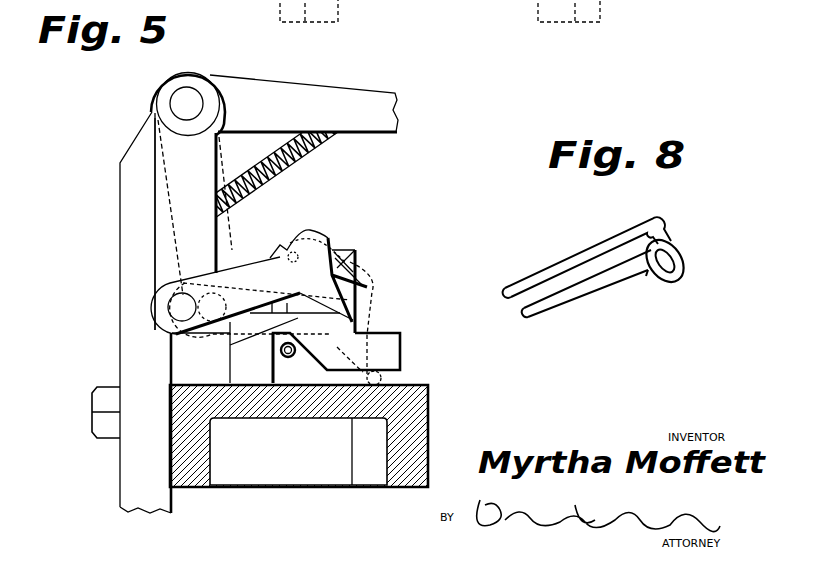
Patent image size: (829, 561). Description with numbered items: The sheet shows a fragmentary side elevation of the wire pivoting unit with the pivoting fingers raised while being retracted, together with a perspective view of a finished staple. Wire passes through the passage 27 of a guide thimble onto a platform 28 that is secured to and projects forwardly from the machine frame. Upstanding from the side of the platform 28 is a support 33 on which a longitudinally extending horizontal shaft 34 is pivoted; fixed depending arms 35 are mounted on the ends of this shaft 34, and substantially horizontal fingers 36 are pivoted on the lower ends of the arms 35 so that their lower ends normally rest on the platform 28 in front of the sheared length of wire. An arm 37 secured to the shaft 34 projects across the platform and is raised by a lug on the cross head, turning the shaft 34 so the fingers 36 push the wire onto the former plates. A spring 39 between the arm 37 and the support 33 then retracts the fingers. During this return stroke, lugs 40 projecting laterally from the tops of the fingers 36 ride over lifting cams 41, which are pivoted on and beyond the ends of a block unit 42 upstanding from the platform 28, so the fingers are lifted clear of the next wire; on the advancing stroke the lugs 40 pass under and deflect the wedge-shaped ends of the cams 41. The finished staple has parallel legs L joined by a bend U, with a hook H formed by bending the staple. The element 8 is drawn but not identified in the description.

In FIG. 5, the support 33 is at (138, 224).
In FIG. 5, the horizontal shaft 34 is at (190, 102).
In FIG. 5, the depending arms 35 is at (178, 172).
In FIG. 5, the fingers 36 is at (247, 275).
In FIG. 5, the arm 37 is at (302, 100).
In FIG. 5, the spring 39 is at (300, 160).
In FIG. 5, the lugs 40 is at (313, 233).
In FIG. 5, the lifting cams 41 is at (340, 268).
In FIG. 5, the block unit 42 is at (327, 325).
In FIG. 5, the support wall 8 is at (283, 352).
In FIG. 5, the passage 27 is at (295, 352).
In FIG. 5, the platform 28 is at (410, 415).
In FIG. 8, the legs L is at (565, 293).
In FIG. 8, the hook H is at (679, 251).
In FIG. 8, the bend U is at (651, 282).